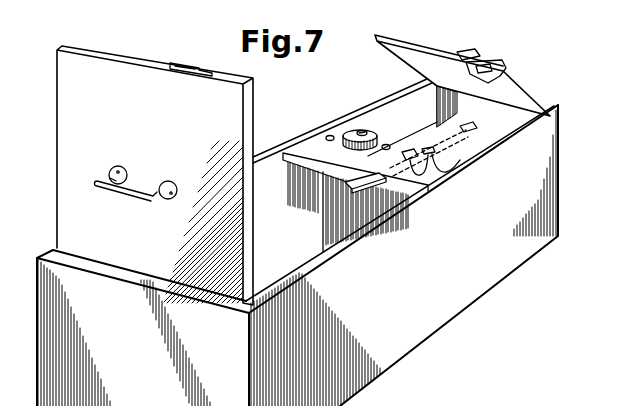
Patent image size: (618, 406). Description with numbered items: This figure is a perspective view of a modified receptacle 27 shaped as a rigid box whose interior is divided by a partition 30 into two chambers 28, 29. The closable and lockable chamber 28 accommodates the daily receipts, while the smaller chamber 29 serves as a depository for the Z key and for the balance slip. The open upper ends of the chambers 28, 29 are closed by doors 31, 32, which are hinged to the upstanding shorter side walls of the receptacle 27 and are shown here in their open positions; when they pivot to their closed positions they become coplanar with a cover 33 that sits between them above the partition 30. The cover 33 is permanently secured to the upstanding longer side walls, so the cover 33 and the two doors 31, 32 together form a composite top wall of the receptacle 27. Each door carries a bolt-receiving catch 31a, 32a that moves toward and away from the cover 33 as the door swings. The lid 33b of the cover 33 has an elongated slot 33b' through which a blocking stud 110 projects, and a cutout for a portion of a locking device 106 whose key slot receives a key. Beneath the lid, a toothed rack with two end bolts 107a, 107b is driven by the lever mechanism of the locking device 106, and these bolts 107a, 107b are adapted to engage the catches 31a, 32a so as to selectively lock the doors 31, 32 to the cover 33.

The receptacle 27 is at (478, 320).
The chamber 28 is at (263, 162).
The chamber 29 is at (402, 100).
The partition 30 is at (313, 230).
The door 31 is at (68, 152).
The catch 31a is at (184, 60).
The door 32 is at (410, 47).
The catch 32a is at (494, 57).
The cover 33 is at (299, 132).
The lid 33b is at (400, 203).
The elongated slot 33b' is at (403, 209).
The locking device 106 is at (345, 130).
The bolt 107a is at (338, 183).
The bolt 107b is at (468, 123).
The blocking stud 110 is at (430, 184).